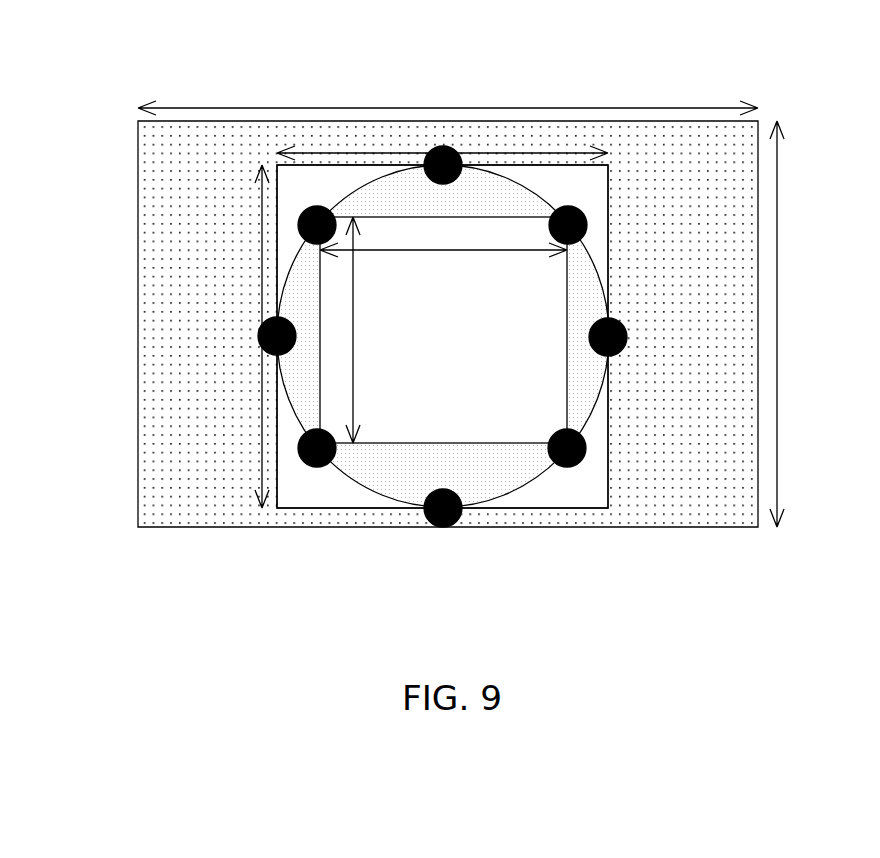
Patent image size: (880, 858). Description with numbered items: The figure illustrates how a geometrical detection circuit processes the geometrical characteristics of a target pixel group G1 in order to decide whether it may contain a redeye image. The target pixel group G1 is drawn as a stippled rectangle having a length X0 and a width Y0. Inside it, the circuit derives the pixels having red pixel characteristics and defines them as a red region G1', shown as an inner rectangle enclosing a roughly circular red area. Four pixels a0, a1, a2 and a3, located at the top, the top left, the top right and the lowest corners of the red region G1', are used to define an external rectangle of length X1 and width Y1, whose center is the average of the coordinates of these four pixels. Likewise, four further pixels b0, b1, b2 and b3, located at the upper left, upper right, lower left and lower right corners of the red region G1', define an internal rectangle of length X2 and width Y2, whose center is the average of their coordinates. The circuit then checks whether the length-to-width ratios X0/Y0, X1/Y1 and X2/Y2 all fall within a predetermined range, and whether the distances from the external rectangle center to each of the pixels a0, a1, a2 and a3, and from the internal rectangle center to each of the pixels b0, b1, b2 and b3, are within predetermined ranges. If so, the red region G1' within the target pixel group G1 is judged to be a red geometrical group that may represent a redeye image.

The target pixel group G1 is at (448, 350).
The red region G1' is at (443, 371).
The top pixel of the red region a0 is at (443, 146).
The top left pixel of the red region a1 is at (258, 336).
The top right pixel of the red region a2 is at (627, 340).
The lowest pixel of the red region a3 is at (443, 527).
The upper left corner pixel of the red region b0 is at (317, 206).
The upper right corner pixel of the red region b1 is at (568, 206).
The lower left corner pixel of the red region b2 is at (317, 467).
The lower right corner pixel of the red region b3 is at (567, 467).
The length of the target pixel group X0 is at (448, 97).
The length of the external rectangle X1 is at (442, 143).
The length of the internal rectangle X2 is at (443, 240).
The width of the target pixel group Y0 is at (789, 324).
The width of the external rectangle Y1 is at (245, 336).
The width of the internal rectangle Y2 is at (341, 330).